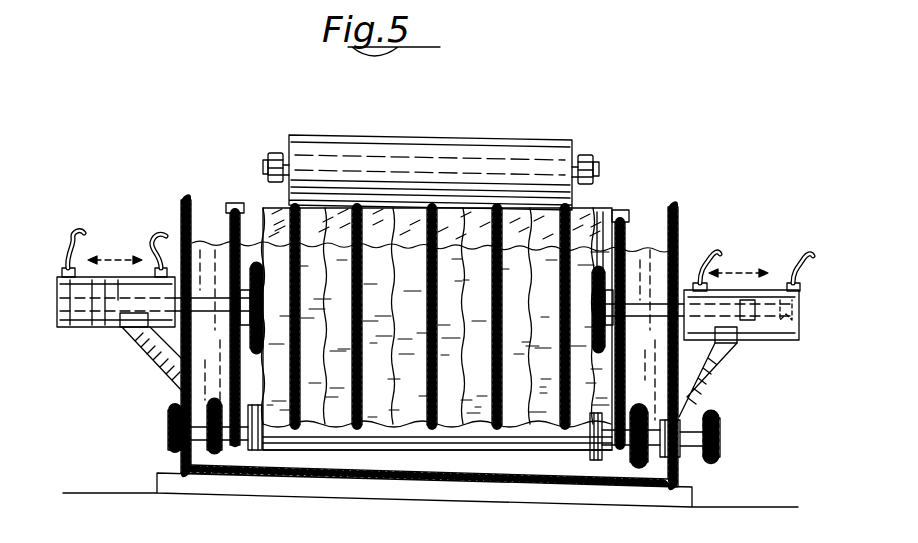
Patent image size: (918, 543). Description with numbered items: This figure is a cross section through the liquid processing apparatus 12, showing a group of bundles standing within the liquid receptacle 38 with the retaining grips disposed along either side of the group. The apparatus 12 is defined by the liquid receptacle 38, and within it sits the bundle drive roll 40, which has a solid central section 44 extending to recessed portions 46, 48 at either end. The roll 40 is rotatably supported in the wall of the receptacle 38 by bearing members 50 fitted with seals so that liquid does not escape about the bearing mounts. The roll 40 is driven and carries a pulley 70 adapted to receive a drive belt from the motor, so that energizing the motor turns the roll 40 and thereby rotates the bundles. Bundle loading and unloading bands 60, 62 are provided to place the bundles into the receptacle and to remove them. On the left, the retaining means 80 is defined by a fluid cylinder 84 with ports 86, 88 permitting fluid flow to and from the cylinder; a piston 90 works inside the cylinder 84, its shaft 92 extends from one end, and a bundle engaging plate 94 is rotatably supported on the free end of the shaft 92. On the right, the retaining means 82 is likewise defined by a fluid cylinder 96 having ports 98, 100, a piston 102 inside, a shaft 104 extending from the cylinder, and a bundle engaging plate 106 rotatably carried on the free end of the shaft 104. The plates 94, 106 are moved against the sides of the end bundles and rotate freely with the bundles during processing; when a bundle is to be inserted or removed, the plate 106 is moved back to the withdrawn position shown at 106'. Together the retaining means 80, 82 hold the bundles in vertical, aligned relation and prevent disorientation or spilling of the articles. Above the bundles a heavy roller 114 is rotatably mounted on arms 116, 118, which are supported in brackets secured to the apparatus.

The liquid processing apparatus 12 is at (719, 178).
The liquid receptacle 38 is at (180, 398).
The bundle drive roll 40 is at (306, 446).
The solid central section 44 is at (528, 446).
The recessed portion 46 is at (244, 438).
The recessed portion 48 is at (626, 450).
The bearing members 50 is at (166, 443).
The bundle loading band 60 is at (226, 208).
The bundle unloading band 62 is at (627, 246).
The pulley 70 is at (722, 456).
The retaining means 80 is at (120, 366).
The retaining means 82 is at (743, 354).
The fluid cylinder 84 is at (57, 292).
The port 86 is at (76, 228).
The port 88 is at (160, 232).
The piston 90 is at (103, 326).
The shaft 92 is at (180, 372).
The bundle engaging plate 94 is at (235, 203).
The fluid cylinder 96 is at (800, 333).
The port 98 is at (714, 253).
The port 100 is at (808, 255).
The piston 102 is at (800, 312).
The shaft 104 is at (648, 318).
The bundle engaging plate 106 is at (621, 255).
The withdrawn position of plate 106' is at (690, 309).
The heavy roller 114 is at (366, 148).
The arm 116 is at (276, 153).
The arm 118 is at (590, 155).